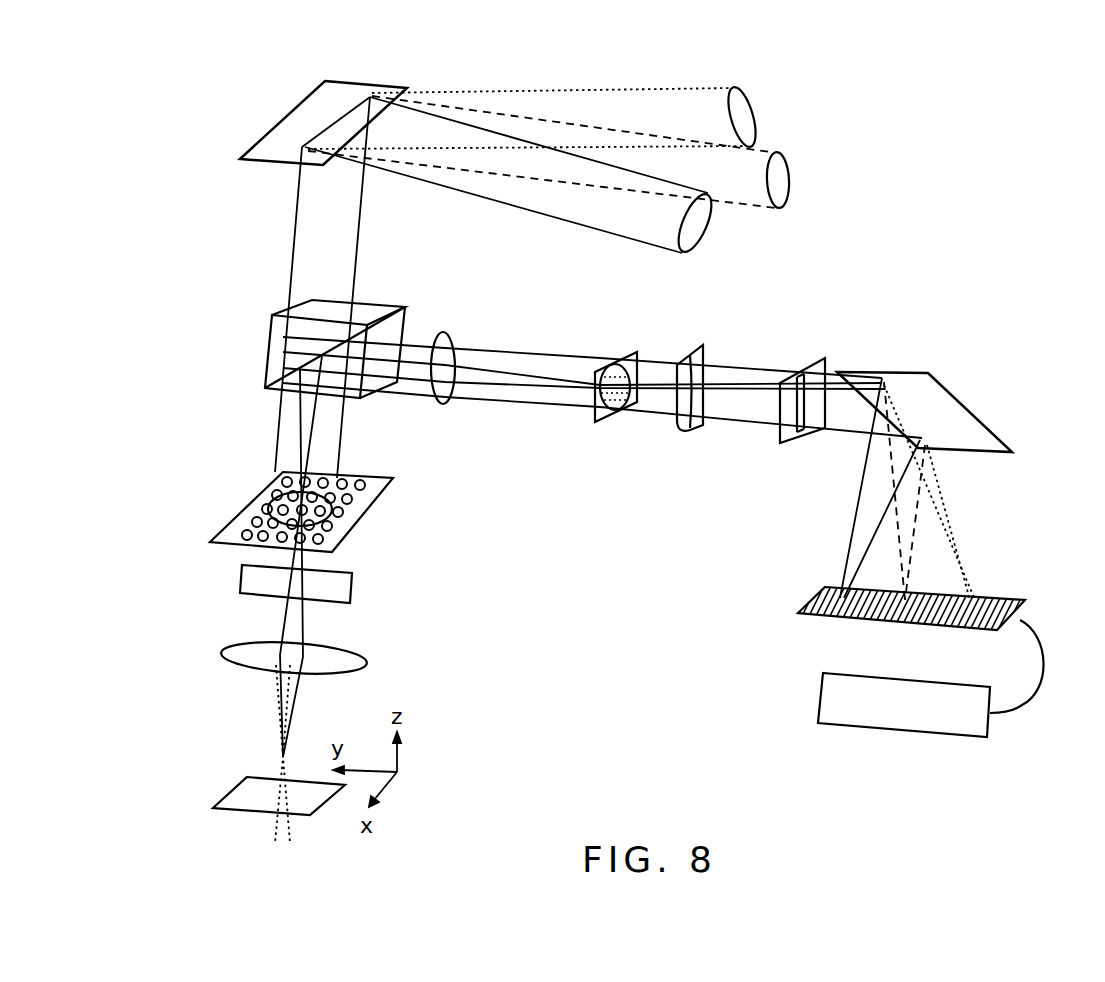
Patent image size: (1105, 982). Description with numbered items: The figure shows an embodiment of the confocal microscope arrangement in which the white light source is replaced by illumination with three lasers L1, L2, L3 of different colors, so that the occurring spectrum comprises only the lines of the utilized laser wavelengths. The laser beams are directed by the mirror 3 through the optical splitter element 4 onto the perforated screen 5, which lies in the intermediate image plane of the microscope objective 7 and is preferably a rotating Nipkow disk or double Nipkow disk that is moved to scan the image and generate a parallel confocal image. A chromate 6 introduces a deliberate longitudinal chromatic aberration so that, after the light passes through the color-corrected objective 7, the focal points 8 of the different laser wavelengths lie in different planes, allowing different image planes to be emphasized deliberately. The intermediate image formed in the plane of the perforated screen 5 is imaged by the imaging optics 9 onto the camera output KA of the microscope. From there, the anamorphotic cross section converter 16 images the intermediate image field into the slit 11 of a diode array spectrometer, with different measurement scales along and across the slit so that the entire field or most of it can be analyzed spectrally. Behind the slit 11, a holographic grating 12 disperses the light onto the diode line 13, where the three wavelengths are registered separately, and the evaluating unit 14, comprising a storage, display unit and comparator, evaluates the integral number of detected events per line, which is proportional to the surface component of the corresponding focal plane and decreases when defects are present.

The mirror 3 is at (280, 130).
The optical splitter element 4 is at (393, 303).
The perforated screen 5 is at (265, 484).
The chromate 6 is at (242, 571).
The microscope objective 7 is at (222, 657).
The focal points 8 is at (226, 796).
The imaging optics 9 is at (447, 335).
The camera output KA is at (623, 357).
The cross section converter 16 is at (680, 450).
The slit 11 is at (790, 443).
The grating 12 is at (978, 420).
The diode line 13 is at (1020, 600).
The evaluating unit 14 is at (931, 678).
The laser L1 is at (707, 237).
The laser L2 is at (791, 168).
The laser L3 is at (750, 97).